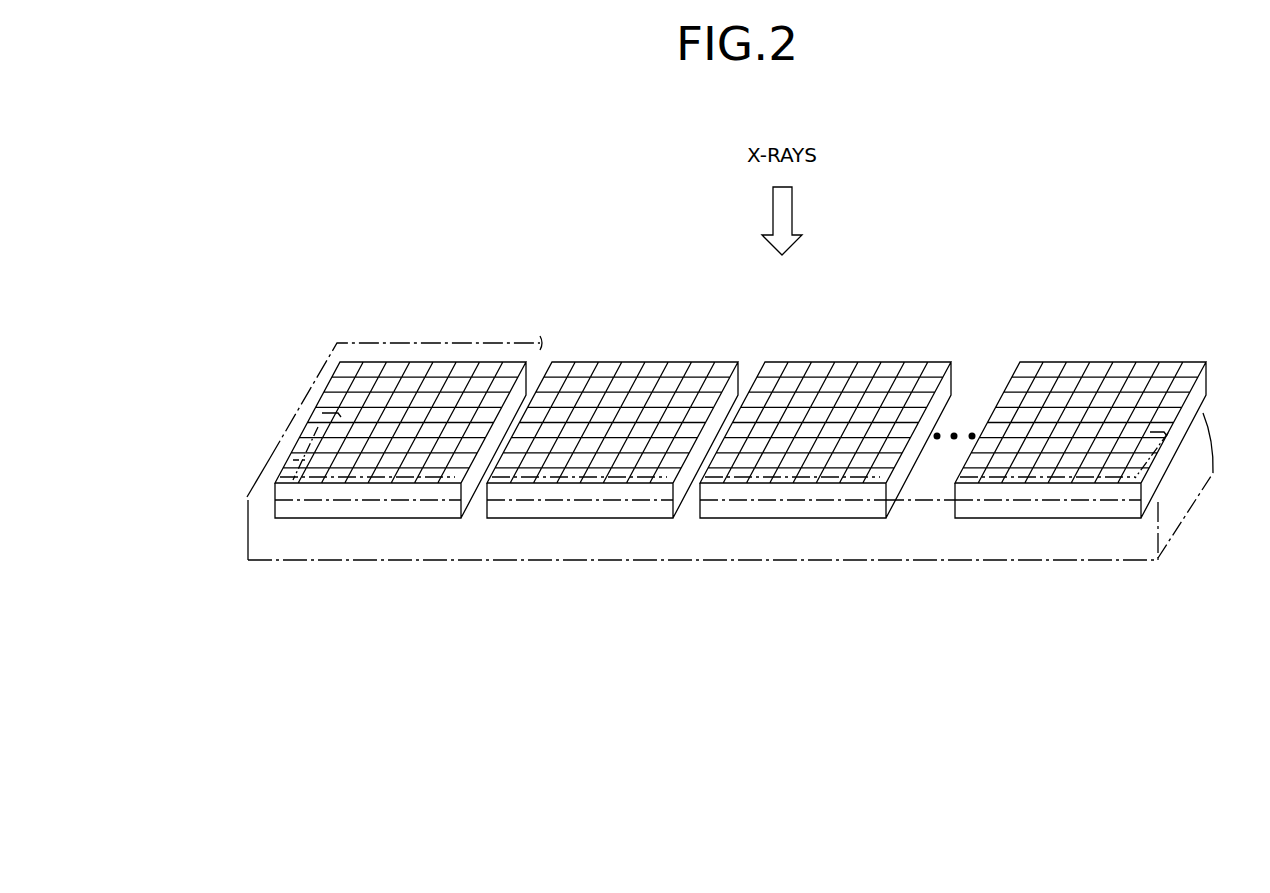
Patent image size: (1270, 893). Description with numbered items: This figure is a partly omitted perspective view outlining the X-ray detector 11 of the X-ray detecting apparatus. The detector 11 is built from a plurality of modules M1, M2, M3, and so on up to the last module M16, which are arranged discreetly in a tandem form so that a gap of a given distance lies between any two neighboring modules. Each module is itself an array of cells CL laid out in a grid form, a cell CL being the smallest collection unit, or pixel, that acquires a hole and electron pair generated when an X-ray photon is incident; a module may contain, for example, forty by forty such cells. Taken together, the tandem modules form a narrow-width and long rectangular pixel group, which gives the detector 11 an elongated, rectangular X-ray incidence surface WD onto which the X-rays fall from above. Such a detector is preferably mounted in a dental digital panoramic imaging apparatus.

The X-ray detector 11 is at (308, 387).
The module M1 is at (437, 370).
The module M2 is at (652, 370).
The module M3 is at (863, 368).
The module M16 is at (1115, 368).
The cell CL is at (350, 365).
The X-ray incidence surface WD is at (300, 460).